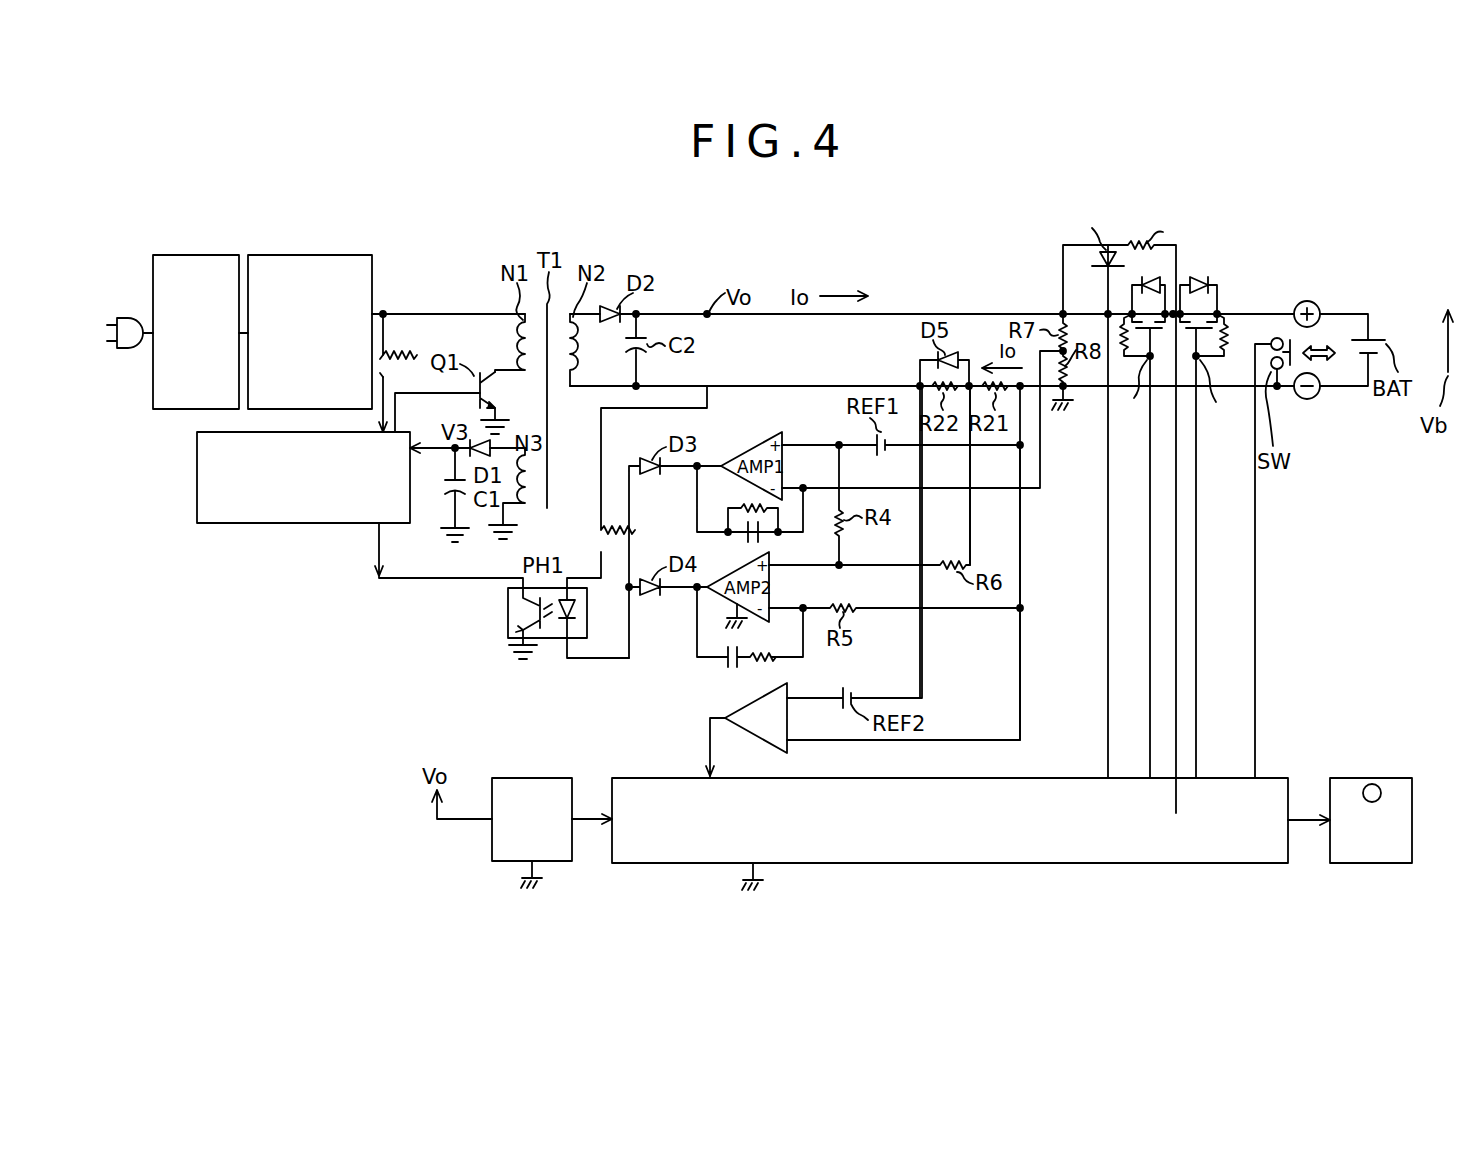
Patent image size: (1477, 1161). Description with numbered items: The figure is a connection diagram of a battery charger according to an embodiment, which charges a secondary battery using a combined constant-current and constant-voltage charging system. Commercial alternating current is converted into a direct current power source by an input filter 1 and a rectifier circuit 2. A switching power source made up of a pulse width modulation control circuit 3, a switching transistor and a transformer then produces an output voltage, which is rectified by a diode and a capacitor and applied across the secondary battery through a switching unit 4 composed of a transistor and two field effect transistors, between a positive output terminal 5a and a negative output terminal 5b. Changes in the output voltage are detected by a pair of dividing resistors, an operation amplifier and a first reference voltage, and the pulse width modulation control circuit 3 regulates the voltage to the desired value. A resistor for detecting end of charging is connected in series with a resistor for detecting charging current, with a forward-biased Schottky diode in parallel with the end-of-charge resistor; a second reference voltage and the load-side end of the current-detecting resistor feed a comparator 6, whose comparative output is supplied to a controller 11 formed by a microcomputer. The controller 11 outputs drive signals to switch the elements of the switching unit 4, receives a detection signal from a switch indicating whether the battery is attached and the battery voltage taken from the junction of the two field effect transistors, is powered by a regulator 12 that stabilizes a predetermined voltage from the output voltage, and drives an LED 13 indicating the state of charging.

The input filter 1 is at (210, 255).
The rectifier circuit 2 is at (316, 255).
The pulse width modulation control circuit 3 is at (313, 524).
The switching unit 4 is at (1249, 216).
The output terminal 5a is at (1307, 301).
The output terminal 5b is at (1307, 400).
The comparator 6 is at (739, 703).
The controller 11 is at (637, 778).
The regulator 12 is at (533, 778).
The LED 13 is at (1372, 778).